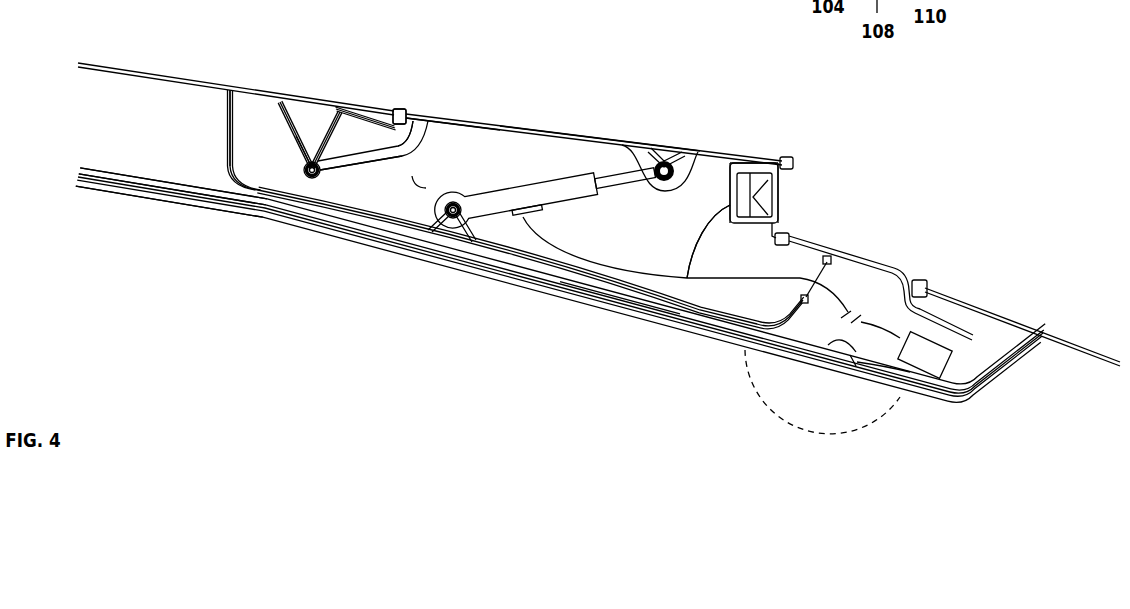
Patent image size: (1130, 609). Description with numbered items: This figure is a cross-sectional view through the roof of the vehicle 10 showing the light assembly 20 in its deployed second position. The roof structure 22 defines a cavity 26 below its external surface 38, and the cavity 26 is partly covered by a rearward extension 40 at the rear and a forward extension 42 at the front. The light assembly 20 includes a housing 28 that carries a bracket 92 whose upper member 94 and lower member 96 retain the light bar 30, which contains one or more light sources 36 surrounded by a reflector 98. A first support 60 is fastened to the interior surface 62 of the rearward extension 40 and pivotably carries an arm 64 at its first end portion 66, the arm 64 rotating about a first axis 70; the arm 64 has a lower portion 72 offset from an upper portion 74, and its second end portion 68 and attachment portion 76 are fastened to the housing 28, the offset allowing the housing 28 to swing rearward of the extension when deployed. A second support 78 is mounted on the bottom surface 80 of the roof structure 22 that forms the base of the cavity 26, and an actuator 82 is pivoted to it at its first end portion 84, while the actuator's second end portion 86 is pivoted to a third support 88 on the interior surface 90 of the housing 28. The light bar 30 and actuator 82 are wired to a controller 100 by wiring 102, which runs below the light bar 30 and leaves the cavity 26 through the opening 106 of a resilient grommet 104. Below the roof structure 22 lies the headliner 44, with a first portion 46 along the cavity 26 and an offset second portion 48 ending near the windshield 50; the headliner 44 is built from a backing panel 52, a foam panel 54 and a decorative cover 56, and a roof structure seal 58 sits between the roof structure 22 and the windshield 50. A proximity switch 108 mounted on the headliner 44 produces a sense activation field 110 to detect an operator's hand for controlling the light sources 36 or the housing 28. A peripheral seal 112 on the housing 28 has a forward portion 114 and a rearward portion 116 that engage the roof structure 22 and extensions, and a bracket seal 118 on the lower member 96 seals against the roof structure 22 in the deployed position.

The vehicle 10 is at (188, 72).
The light assembly 20 is at (585, 124).
The roof structure 22 is at (218, 88).
The cavity 26 is at (416, 178).
The housing 28 is at (563, 125).
The light bar 30 is at (724, 170).
The light sources 36 is at (780, 200).
The external surface 38 is at (338, 102).
The rearward extension 40 is at (380, 108).
The forward extension 42 is at (853, 262).
The headliner 44 is at (518, 288).
The first portion 46 is at (616, 323).
The second portion 48 is at (1029, 373).
The windshield 50 is at (1003, 316).
The backing panel 52 is at (110, 173).
The foam panel 54 is at (76, 171).
The decorative cover 56 is at (112, 187).
The roof structure seal 58 is at (918, 282).
The first support 60 is at (299, 128).
The interior surface 62 is at (255, 110).
The arm 64 is at (368, 160).
The first end portion 66 is at (319, 188).
The second end portion 68 is at (436, 118).
The first axis 70 is at (300, 155).
The lower portion 72 is at (347, 179).
The upper portion 74 is at (412, 132).
The attachment portion 76 is at (478, 116).
The second support 78 is at (468, 236).
The bottom surface 80 is at (577, 276).
The actuator 82 is at (555, 190).
The first end portion 84 is at (434, 238).
The second end portion 86 is at (684, 146).
The third support 88 is at (688, 140).
The interior surface 90 is at (667, 140).
The bracket 92 is at (757, 156).
The upper member 94 is at (770, 158).
The lower member 96 is at (744, 215).
The reflector 98 is at (756, 215).
The controller 100 is at (937, 365).
The wiring 102 is at (657, 280).
The grommet 104 is at (812, 312).
The opening 106 is at (834, 279).
The proximity switch 108 is at (832, 372).
The sense activation field 110 is at (903, 405).
The peripheral seal 112 is at (793, 163).
The forward portion 114 is at (800, 168).
The rearward portion 116 is at (395, 133).
The bracket seal 118 is at (790, 240).